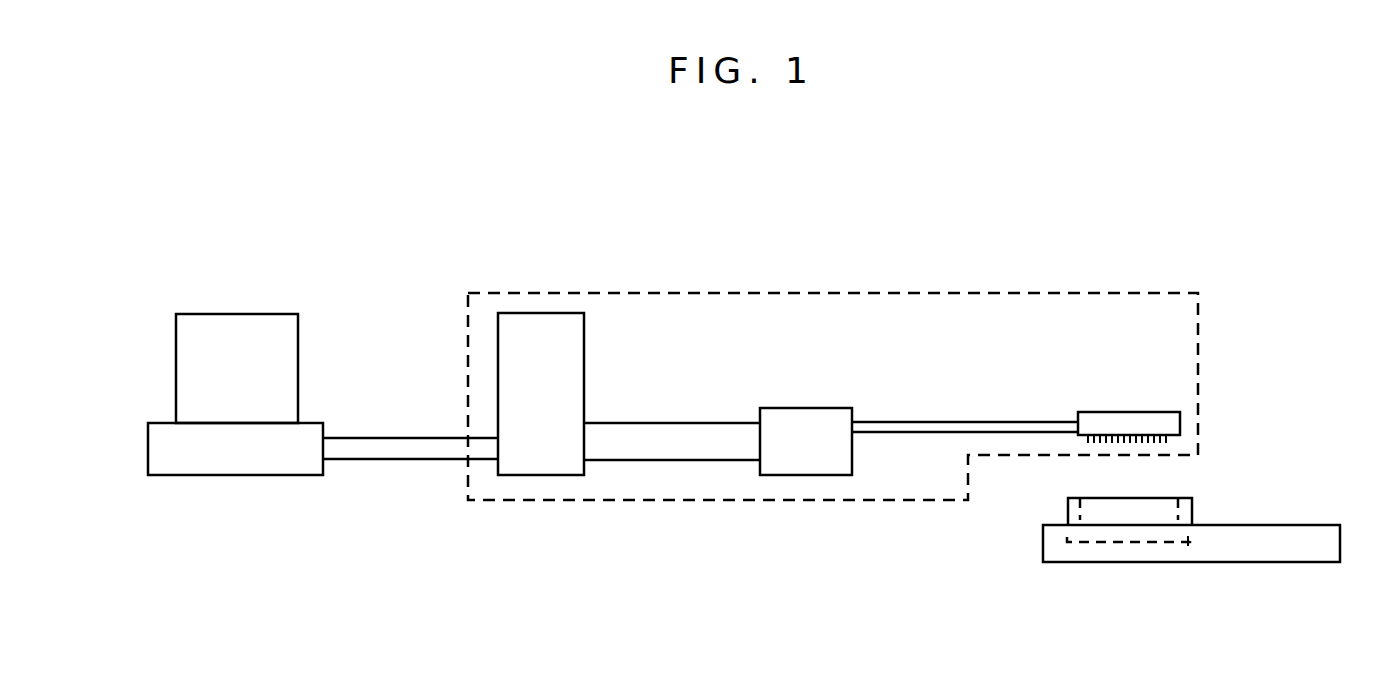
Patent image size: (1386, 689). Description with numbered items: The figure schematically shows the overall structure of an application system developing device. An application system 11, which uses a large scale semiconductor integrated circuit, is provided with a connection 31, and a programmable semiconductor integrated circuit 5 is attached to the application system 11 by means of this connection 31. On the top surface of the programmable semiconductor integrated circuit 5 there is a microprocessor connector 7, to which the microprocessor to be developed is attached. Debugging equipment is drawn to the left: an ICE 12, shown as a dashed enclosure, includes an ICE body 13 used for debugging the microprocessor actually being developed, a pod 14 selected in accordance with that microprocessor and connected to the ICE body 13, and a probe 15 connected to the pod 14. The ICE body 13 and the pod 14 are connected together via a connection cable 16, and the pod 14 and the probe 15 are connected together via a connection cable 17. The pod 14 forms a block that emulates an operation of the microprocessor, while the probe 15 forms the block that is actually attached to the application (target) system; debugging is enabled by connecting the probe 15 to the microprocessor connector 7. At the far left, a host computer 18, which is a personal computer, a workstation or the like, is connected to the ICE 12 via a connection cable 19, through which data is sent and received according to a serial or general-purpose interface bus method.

The host computer 18 is at (280, 315).
The connection cable 19 is at (410, 433).
The ICE 12 is at (663, 502).
The ICE body 13 is at (541, 394).
The connection cable 16 is at (672, 441).
The pod 14 is at (806, 441).
The connection cable 17 is at (965, 409).
The probe 15 is at (1129, 408).
The application system 11 is at (1302, 525).
The programmable semiconductor integrated circuit 5 is at (1192, 510).
The microprocessor connector 7 is at (1147, 508).
The connection 31 is at (1190, 555).